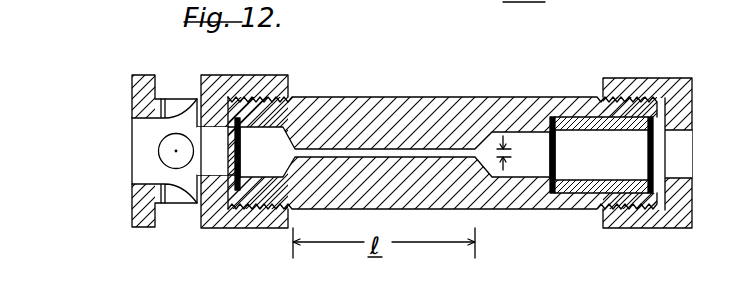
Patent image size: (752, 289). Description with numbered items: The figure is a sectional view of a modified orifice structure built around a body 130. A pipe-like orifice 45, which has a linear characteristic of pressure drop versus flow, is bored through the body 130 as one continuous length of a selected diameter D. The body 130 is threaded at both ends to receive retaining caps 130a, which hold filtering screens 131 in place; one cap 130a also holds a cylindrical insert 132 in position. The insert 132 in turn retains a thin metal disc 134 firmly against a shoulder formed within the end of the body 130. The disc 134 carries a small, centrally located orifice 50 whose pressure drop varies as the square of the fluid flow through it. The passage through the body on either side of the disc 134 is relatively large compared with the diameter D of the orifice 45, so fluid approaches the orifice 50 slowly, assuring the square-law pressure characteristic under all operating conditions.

The retaining cap 130a is at (250, 76).
The body 130 is at (333, 103).
The pipe-like orifice 45 is at (382, 147).
The orifice diameter D is at (510, 150).
The filtering screen 131 is at (262, 150).
The thin metal disc 134 is at (551, 117).
The cylindrical insert 132 is at (576, 128).
The small orifice 50 is at (553, 157).